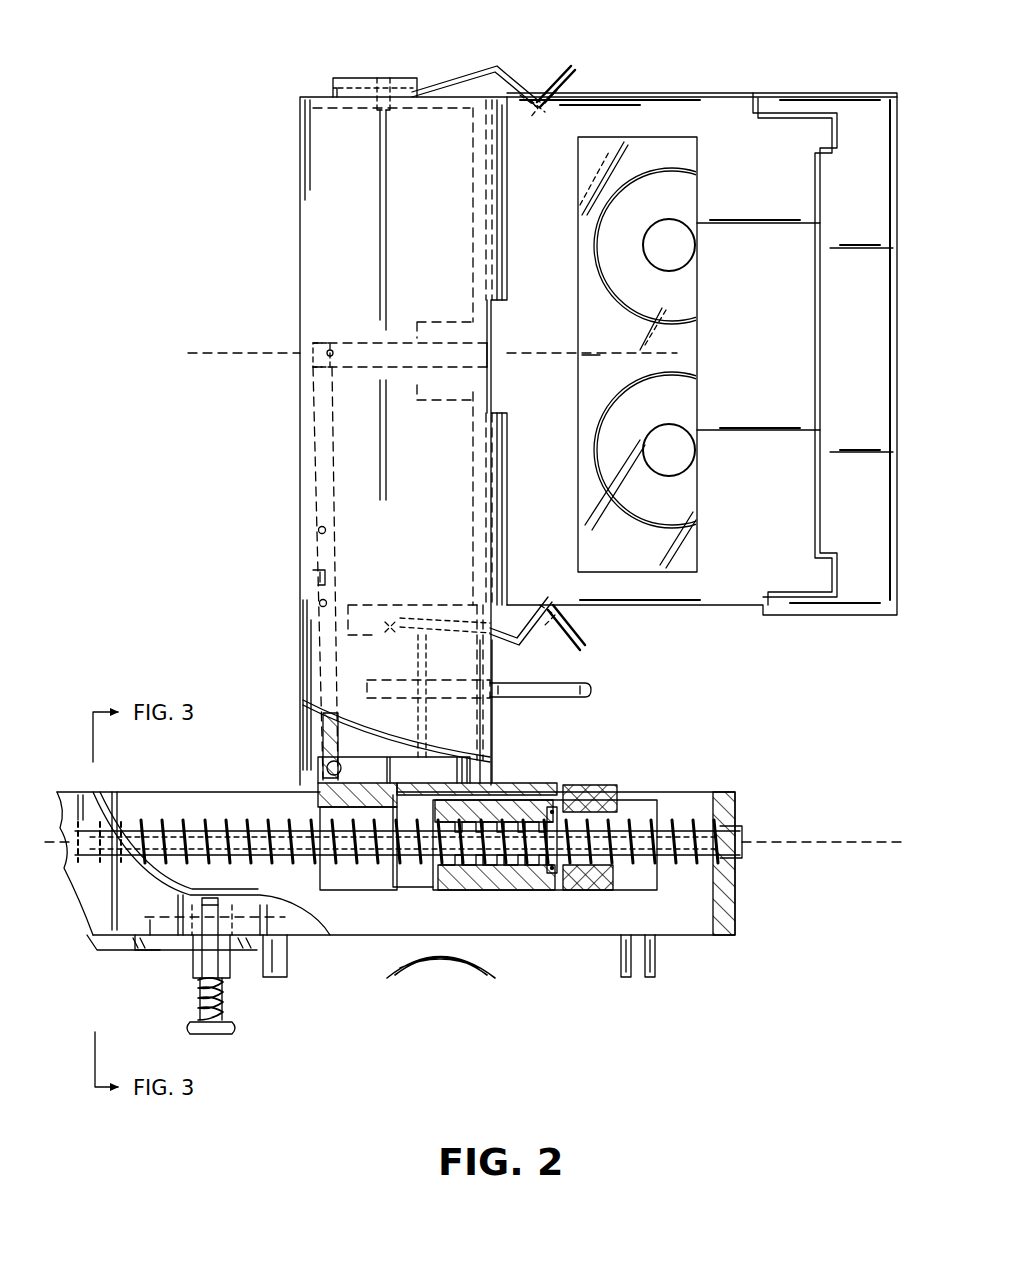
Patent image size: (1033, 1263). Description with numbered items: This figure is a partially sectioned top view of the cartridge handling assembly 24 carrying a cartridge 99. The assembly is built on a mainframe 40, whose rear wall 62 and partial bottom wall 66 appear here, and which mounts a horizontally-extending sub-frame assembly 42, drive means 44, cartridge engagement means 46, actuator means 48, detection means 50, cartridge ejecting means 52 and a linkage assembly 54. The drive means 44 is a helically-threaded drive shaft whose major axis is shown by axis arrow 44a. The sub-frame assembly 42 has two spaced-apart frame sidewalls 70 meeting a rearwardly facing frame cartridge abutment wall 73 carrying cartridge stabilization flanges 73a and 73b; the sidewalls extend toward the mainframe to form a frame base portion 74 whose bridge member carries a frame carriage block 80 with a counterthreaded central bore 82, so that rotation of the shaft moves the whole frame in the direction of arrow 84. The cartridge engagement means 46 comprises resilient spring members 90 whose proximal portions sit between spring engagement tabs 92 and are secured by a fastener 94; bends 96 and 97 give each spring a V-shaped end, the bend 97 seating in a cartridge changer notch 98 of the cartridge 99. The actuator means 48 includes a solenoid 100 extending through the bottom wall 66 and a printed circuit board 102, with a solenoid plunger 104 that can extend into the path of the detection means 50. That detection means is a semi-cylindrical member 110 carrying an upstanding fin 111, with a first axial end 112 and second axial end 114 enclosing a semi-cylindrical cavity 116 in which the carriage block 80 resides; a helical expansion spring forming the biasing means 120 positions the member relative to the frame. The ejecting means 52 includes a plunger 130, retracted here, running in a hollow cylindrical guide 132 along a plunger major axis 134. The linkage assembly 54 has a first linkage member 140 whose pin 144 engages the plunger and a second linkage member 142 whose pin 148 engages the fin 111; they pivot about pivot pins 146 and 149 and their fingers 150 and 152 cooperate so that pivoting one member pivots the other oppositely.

The cartridge handling assembly 24 is at (208, 205).
The mainframe 40 is at (768, 742).
The sub-frame assembly 42 is at (300, 272).
The drive means 44 is at (745, 830).
The axis arrow 44a is at (835, 842).
The cartridge engagement means 46 is at (578, 70).
The actuator means 48 is at (240, 1030).
The detection means 50 is at (275, 757).
The cartridge ejecting means 52 is at (502, 342).
The linkage assembly 54 is at (268, 500).
The rear wall 62 is at (735, 885).
The partial bottom wall 66 is at (165, 930).
The frame sidewalls 70 is at (398, 185).
The frame cartridge abutment wall 73 is at (478, 230).
The cartridge stabilization flange 73a is at (497, 215).
The cartridge stabilization flange 73b is at (497, 455).
The frame base portion 74 is at (525, 743).
The frame carriage block 80 is at (490, 890).
The central bore 82 is at (475, 880).
The arrow 84 is at (738, 680).
The resilient spring members 90 is at (560, 75).
The spring engagement tabs 92 is at (340, 82).
The fastener 94 is at (382, 80).
The bend 96 is at (500, 72).
The bend 97 is at (548, 110).
The cartridge changer notch 98 is at (535, 115).
The cartridge 99 is at (700, 605).
The solenoid 100 is at (195, 965).
The printed circuit board 102 is at (80, 945).
The solenoid plunger 104 is at (200, 900).
The semi-cylindrical member 110 is at (328, 787).
The upstanding fin 111 is at (414, 765).
The first axial end 112 is at (330, 875).
The second axial end 114 is at (598, 885).
The semi-cylindrical cavity 116 is at (398, 893).
The biasing means 120 is at (557, 873).
The plunger 130 is at (483, 360).
The hollow cylindrical guide 132 is at (428, 328).
The plunger major axis 134 is at (215, 353).
The first linkage member 140 is at (322, 415).
The second linkage member 142 is at (328, 672).
The pin 144 is at (332, 350).
The pivot pin 146 is at (326, 530).
The pin 148 is at (340, 768).
The pivot pin 149 is at (327, 603).
The finger 150 is at (315, 578).
The finger 152 is at (330, 578).